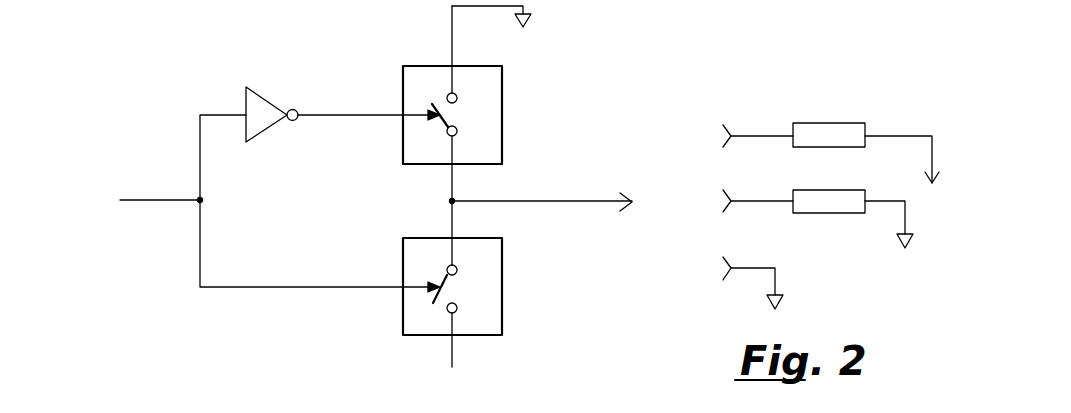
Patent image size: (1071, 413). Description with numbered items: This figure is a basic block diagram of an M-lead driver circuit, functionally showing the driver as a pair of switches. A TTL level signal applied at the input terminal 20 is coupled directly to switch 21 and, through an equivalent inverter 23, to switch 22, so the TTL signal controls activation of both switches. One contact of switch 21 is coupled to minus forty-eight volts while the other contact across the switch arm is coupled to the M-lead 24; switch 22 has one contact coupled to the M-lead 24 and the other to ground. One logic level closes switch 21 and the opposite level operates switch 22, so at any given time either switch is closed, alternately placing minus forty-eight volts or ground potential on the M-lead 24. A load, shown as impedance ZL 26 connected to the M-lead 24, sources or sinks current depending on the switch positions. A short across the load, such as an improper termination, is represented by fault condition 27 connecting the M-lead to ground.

The input terminal 20 is at (165, 200).
The switch 21 is at (502, 255).
The switch 22 is at (502, 80).
The inverter 23 is at (268, 100).
The M-lead 24 is at (575, 201).
The impedance ZL 26 is at (827, 148).
The fault condition 27 is at (757, 268).